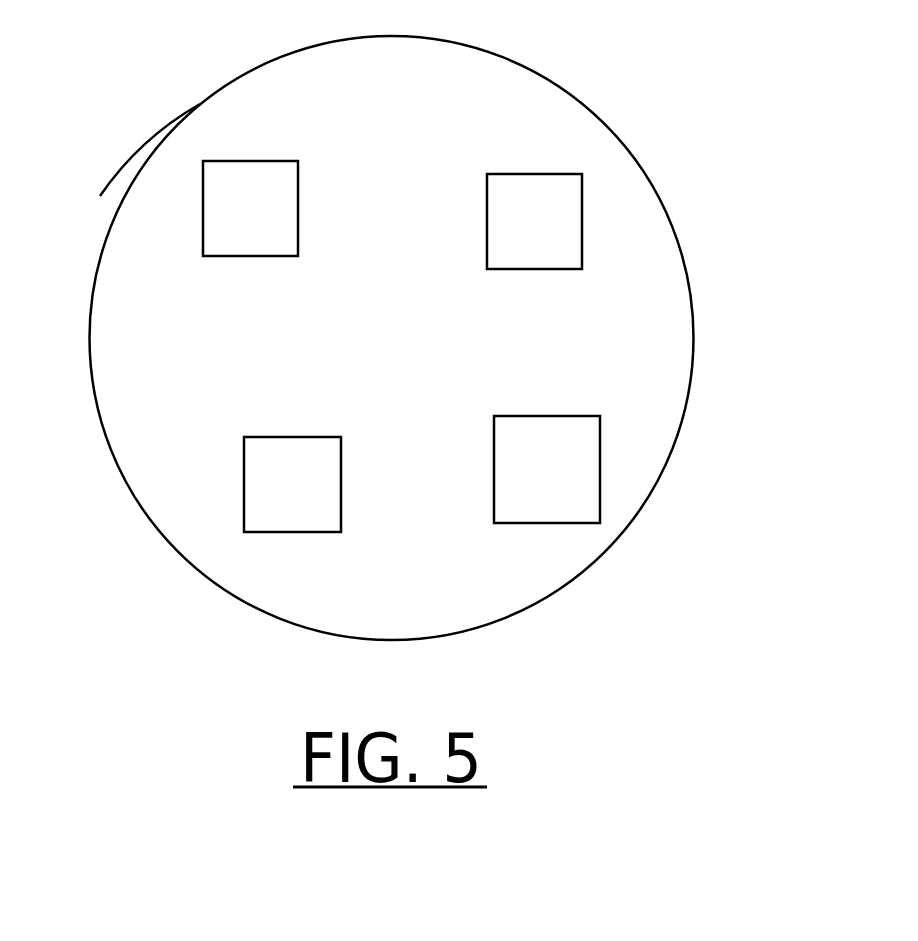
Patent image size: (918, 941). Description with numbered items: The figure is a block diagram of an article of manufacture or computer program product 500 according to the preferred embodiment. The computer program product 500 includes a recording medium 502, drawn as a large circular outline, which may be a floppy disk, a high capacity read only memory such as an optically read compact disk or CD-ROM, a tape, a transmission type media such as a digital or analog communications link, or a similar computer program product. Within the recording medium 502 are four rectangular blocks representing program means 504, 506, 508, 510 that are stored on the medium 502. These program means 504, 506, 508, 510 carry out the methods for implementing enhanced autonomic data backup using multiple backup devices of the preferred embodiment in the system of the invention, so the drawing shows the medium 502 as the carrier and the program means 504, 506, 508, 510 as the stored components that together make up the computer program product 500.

The computer program product 500 is at (660, 133).
The recording medium 502 is at (135, 153).
The program means 504 is at (292, 484).
The program means 506 is at (547, 469).
The program means 508 is at (534, 221).
The program means 510 is at (250, 208).